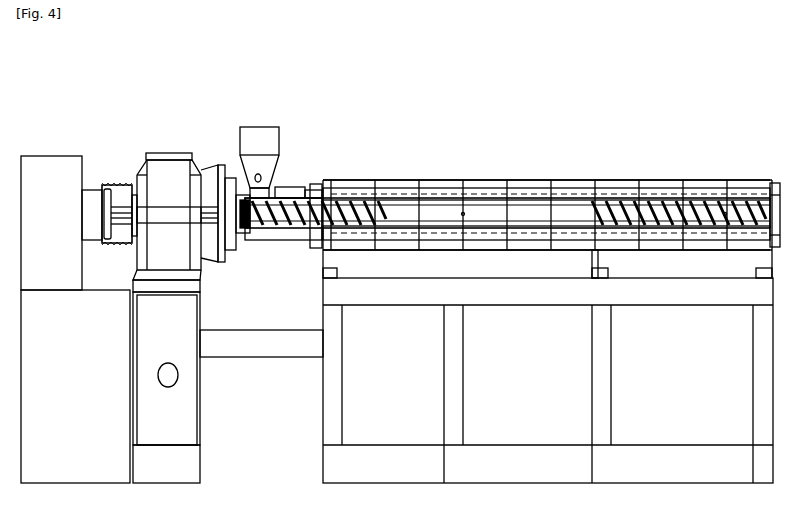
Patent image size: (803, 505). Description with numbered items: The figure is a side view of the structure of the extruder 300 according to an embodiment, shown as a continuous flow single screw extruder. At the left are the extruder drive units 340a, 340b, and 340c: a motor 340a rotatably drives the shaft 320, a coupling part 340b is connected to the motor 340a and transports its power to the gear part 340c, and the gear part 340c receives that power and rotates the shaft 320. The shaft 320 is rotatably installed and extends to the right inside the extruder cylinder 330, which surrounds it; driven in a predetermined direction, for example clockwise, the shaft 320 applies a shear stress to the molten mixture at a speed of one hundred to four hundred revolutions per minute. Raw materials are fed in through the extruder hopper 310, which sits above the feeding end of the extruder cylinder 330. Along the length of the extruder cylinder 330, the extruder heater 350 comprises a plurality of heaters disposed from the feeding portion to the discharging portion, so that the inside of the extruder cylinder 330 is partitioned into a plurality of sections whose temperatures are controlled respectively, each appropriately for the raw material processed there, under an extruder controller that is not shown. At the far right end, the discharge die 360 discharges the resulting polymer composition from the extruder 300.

The extruder 300 is at (520, 51).
The extruder hopper 310 is at (259, 128).
The shaft 320 is at (403, 185).
The extruder cylinder 330 is at (475, 189).
The motor 340a is at (52, 155).
The coupling part 340b is at (113, 182).
The gear part 340c is at (165, 152).
The extruder heater 350 is at (566, 180).
The discharge die 360 is at (777, 182).